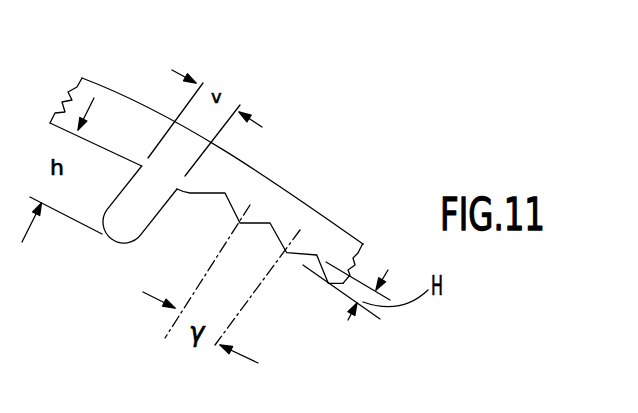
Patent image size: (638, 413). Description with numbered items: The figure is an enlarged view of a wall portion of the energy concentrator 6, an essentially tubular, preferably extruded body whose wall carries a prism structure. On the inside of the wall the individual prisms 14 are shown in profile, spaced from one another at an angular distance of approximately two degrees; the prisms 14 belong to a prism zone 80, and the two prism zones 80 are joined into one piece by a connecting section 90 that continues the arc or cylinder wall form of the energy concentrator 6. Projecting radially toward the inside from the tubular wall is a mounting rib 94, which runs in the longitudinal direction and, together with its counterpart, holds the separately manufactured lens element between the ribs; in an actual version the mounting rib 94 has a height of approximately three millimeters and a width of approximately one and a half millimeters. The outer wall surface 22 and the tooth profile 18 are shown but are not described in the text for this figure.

The energy concentrator 6 is at (331, 171).
The top edge of blade body 22 is at (262, 172).
The connecting section 90 is at (120, 104).
The mounting rib 94 is at (122, 232).
The prism zone 80 is at (309, 207).
The prism 14 is at (236, 204).
The tooth tip 18 is at (328, 283).